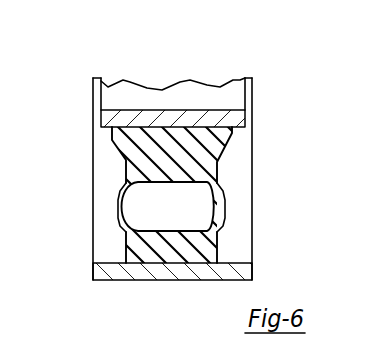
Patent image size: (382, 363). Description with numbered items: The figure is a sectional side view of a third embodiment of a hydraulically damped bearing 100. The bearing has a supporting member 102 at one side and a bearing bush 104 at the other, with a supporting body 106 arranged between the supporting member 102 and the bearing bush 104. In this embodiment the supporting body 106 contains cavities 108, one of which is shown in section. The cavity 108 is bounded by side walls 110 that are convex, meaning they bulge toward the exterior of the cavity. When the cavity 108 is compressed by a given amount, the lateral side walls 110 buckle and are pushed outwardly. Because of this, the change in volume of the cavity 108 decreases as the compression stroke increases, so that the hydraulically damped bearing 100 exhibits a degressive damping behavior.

The hydraulically damped bearing 100 is at (72, 107).
The supporting member 102 is at (211, 271).
The bearing bush 104 is at (225, 122).
The supporting body 106 is at (195, 152).
The cavity 108 is at (193, 210).
The side wall 110 is at (118, 199).